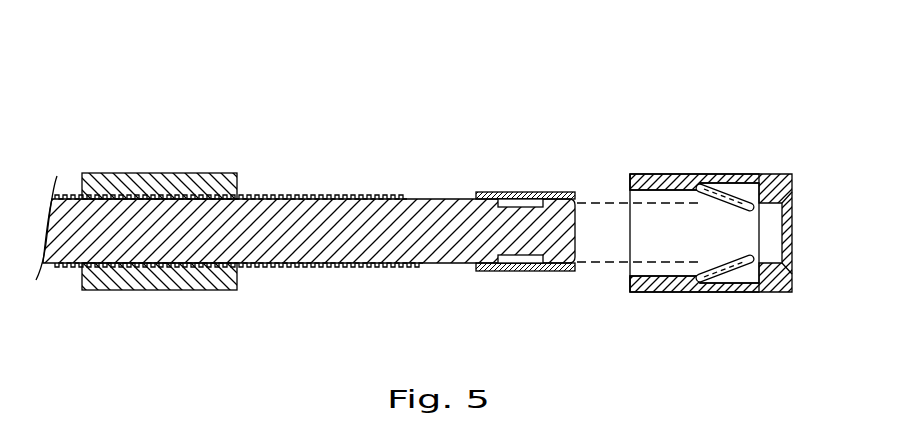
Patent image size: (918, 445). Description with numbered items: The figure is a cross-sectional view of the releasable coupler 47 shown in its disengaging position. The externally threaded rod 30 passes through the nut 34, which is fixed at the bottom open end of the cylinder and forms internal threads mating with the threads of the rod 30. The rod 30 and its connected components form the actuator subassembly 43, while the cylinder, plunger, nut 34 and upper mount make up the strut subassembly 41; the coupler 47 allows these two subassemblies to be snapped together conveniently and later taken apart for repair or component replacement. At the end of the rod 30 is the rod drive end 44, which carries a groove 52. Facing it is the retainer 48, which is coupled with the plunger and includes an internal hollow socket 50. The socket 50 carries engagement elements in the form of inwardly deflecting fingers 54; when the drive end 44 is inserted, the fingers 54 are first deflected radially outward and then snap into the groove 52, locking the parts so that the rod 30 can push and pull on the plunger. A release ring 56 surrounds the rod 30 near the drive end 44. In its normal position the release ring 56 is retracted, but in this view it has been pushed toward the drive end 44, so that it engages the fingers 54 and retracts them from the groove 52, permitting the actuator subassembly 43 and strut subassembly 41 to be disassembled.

The rod 30 is at (307, 195).
The nut 34 is at (128, 172).
The strut subassembly 41 is at (283, 281).
The actuator subassembly 43 is at (763, 320).
The rod drive end 44 is at (568, 268).
The releasable coupler 47 is at (727, 201).
The retainer 48 is at (683, 173).
The socket 50 is at (652, 272).
The groove 52 is at (740, 198).
The fingers 54 is at (745, 283).
The release ring 56 is at (489, 278).